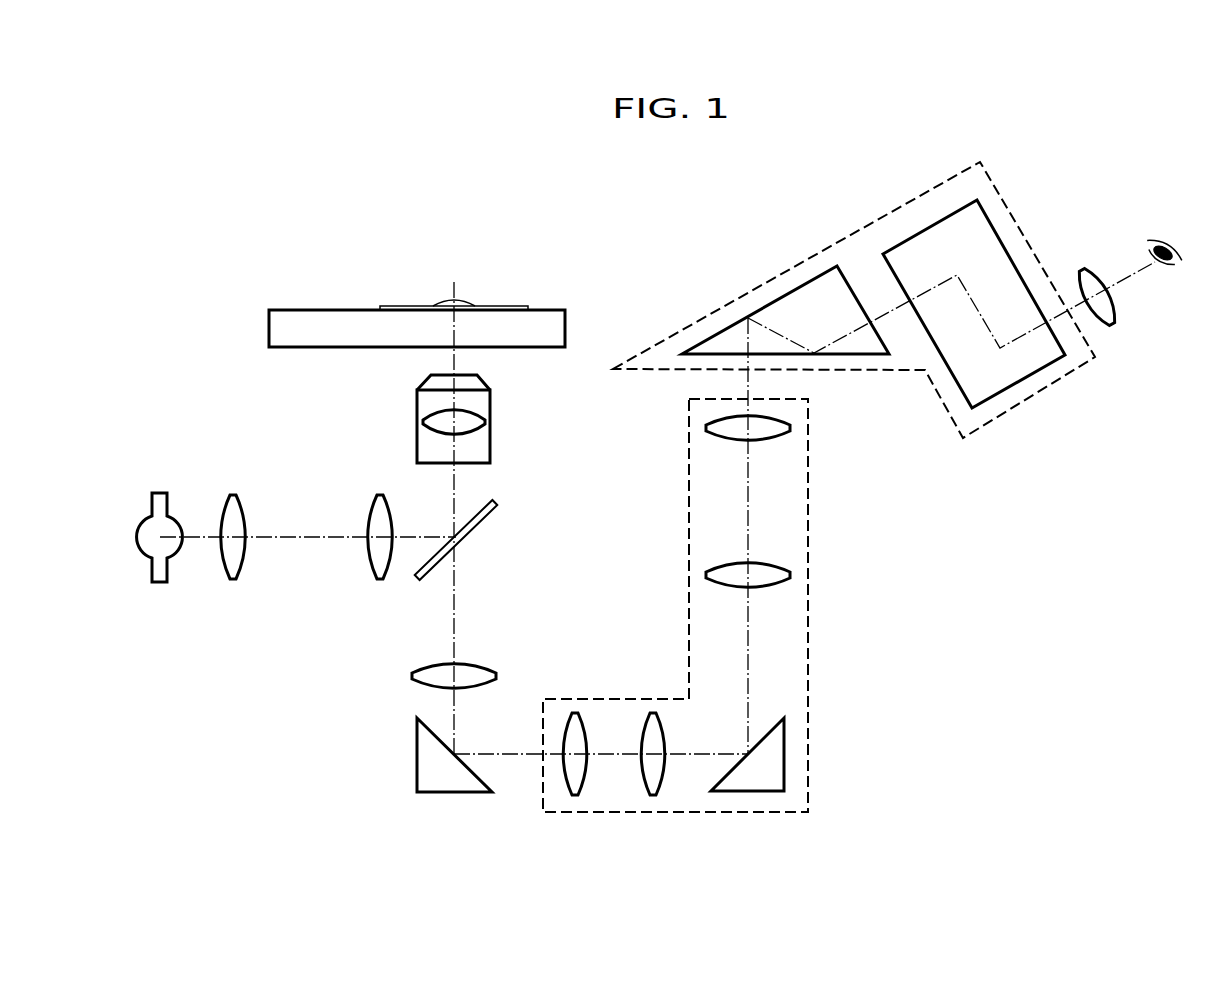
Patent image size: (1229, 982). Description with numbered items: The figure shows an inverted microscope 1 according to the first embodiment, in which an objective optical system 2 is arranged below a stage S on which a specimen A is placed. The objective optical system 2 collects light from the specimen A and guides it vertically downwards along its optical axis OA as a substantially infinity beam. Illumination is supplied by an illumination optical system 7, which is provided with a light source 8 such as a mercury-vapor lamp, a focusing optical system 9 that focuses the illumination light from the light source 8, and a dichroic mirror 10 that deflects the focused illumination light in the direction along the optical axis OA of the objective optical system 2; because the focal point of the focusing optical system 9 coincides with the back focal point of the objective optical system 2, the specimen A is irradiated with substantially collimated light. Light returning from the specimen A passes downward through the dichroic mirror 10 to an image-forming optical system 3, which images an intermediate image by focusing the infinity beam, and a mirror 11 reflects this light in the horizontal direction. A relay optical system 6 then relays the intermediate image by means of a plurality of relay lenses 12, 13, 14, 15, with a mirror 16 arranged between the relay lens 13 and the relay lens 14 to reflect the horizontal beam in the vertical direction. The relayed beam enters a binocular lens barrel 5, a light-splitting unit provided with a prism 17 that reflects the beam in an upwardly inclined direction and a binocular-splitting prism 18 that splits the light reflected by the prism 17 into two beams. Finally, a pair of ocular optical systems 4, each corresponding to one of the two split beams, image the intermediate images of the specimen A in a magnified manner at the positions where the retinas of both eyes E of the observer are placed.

The inverted microscope 1 is at (607, 235).
The objective optical system 2 is at (485, 423).
The image-forming optical system 3 is at (412, 676).
The ocular optical system 4 is at (1110, 325).
The binocular lens barrel 5 is at (995, 185).
The relay optical system 6 is at (808, 650).
The illumination optical system 7 is at (304, 452).
The light source 8 is at (157, 490).
The focusing optical system 9 is at (218, 578).
The dichroic mirror 10 is at (490, 532).
The mirror 11 is at (417, 755).
The relay lens 12 is at (575, 795).
The relay lens 13 is at (653, 795).
The relay lens 14 is at (790, 575).
The relay lens 15 is at (790, 428).
The mirror 16 is at (784, 752).
The prism 17 is at (790, 288).
The binocular-splitting prism 18 is at (1022, 382).
The specimen A is at (470, 298).
The stage S is at (565, 327).
The optical axis OA is at (456, 477).
The eye E is at (1172, 262).